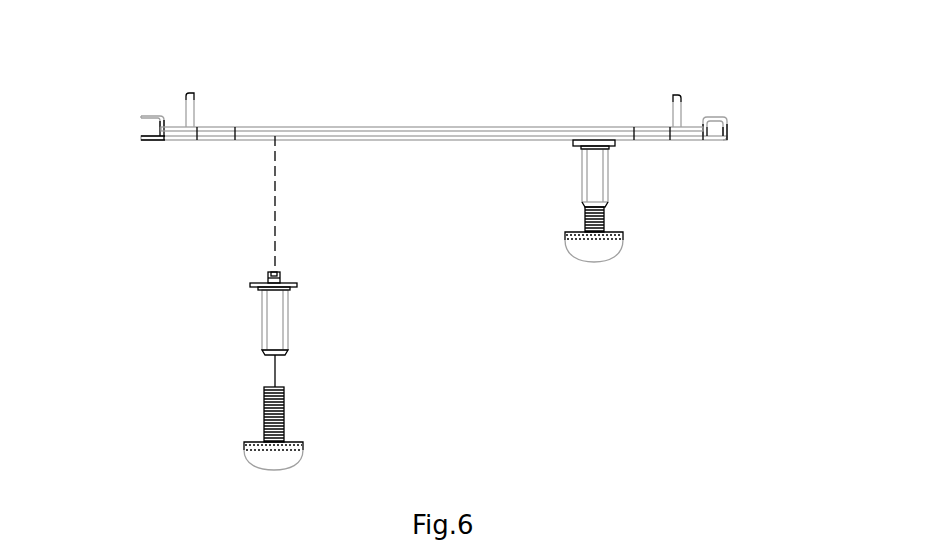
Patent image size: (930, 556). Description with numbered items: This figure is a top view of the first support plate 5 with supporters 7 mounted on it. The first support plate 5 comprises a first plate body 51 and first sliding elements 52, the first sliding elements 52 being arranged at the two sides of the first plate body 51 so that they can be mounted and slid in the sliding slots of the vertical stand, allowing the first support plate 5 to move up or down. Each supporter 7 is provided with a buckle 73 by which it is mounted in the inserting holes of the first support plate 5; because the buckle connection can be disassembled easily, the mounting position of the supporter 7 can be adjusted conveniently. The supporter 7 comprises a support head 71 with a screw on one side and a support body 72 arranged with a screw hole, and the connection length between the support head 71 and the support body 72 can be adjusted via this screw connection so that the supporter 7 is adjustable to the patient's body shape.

The first support plate 5 is at (163, 160).
The first plate body 51 is at (337, 128).
The first sliding element 52 is at (190, 108).
The supporter 7 is at (605, 245).
The support head 71 is at (275, 418).
The support body 72 is at (275, 338).
The buckle 73 is at (268, 270).